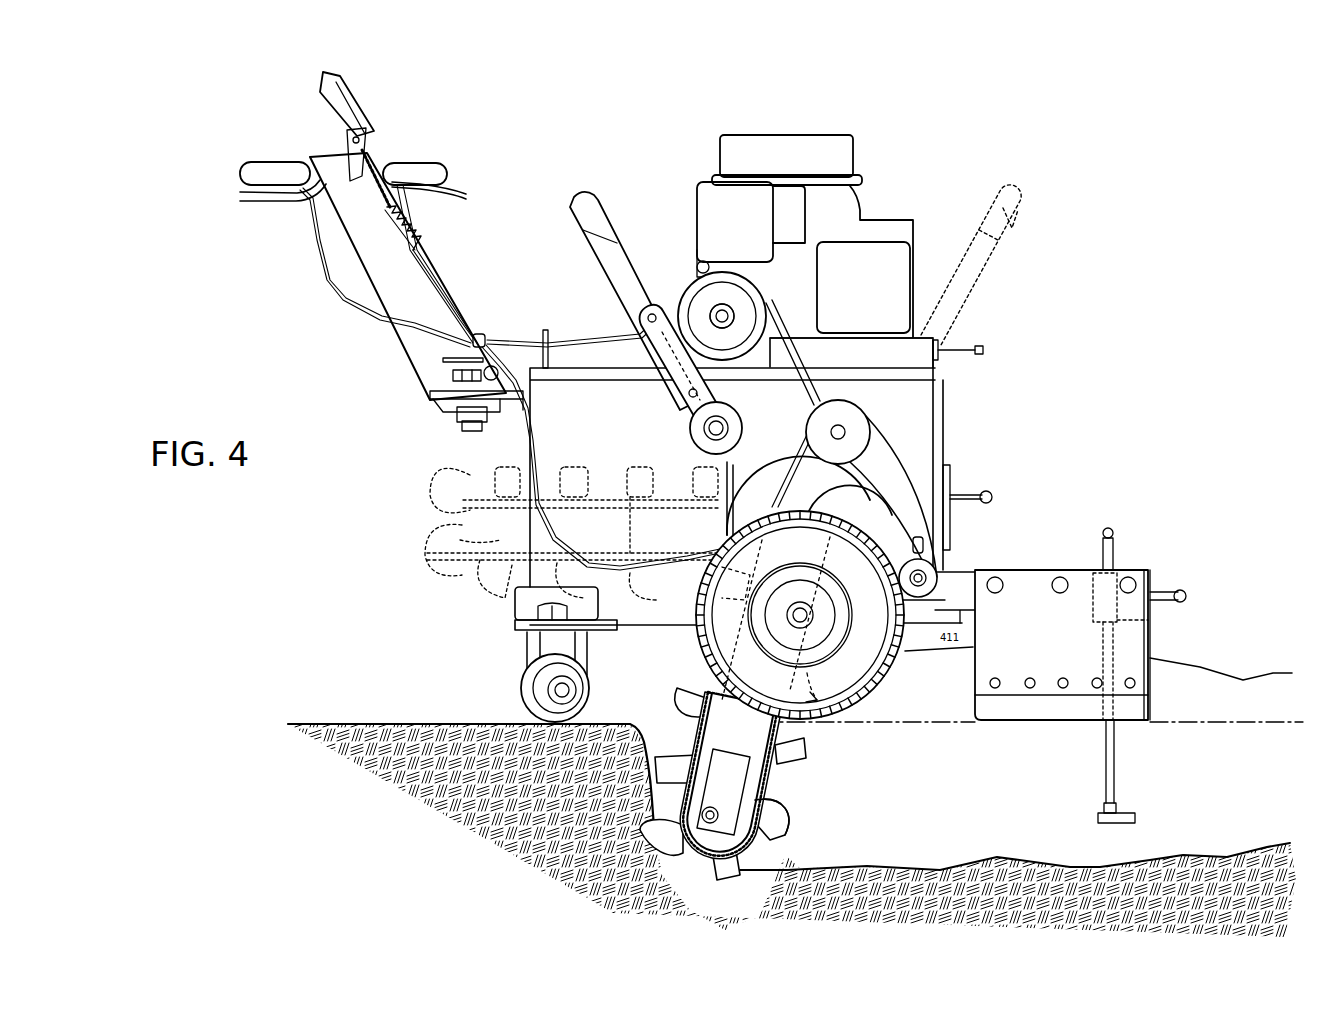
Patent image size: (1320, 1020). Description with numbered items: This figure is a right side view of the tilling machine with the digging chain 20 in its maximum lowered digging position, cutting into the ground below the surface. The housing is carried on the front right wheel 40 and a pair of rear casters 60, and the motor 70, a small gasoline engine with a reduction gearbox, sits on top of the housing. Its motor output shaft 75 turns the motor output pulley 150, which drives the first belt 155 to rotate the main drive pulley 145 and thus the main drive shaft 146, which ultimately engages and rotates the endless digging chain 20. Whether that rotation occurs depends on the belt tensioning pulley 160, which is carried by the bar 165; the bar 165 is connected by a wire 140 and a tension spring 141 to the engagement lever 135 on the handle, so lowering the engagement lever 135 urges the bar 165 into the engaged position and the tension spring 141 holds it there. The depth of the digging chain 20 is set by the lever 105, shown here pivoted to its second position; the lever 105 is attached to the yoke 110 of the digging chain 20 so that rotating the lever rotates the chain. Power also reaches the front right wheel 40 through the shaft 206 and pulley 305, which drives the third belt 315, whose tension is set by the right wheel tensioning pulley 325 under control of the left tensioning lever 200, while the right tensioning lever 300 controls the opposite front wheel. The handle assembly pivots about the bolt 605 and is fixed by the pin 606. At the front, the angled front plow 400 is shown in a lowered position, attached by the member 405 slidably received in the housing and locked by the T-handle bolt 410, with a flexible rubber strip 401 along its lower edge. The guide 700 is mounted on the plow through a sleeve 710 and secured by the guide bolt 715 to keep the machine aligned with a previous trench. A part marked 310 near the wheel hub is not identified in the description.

The digging chain 20 is at (763, 837).
The front right wheel 40 is at (697, 620).
The rear casters 60 is at (580, 705).
The motor 70 is at (747, 158).
The motor output shaft 75 is at (717, 317).
The lever 105 is at (590, 223).
The yoke 110 is at (727, 775).
The engagement lever 135 is at (337, 75).
The wire 140 is at (377, 167).
The tension spring 141 is at (410, 246).
The main drive pulley 145 is at (777, 473).
The main drive shaft 146 is at (857, 497).
The motor output pulley 150 is at (740, 297).
The first belt 155 is at (788, 343).
The belt tensioning pulley 160 is at (697, 433).
The bar 165 is at (663, 343).
The left tensioning lever 200 is at (417, 200).
The shaft 206 is at (820, 397).
The right tensioning lever 300 is at (280, 199).
The pulley 305 is at (837, 427).
The wheel hub 310 is at (808, 615).
The third belt 315 is at (910, 463).
The right wheel tensioning pulley 325 is at (937, 570).
The angled front plow 400 is at (1030, 600).
The flexible rubber strip 401 is at (1127, 707).
The member 405 is at (940, 400).
The T-handle bolt 410 is at (975, 490).
The bolt 605 is at (445, 375).
The pin 606 is at (487, 405).
The guide 700 is at (1137, 817).
The sleeve 710 is at (1137, 623).
The guide bolt 715 is at (1163, 580).